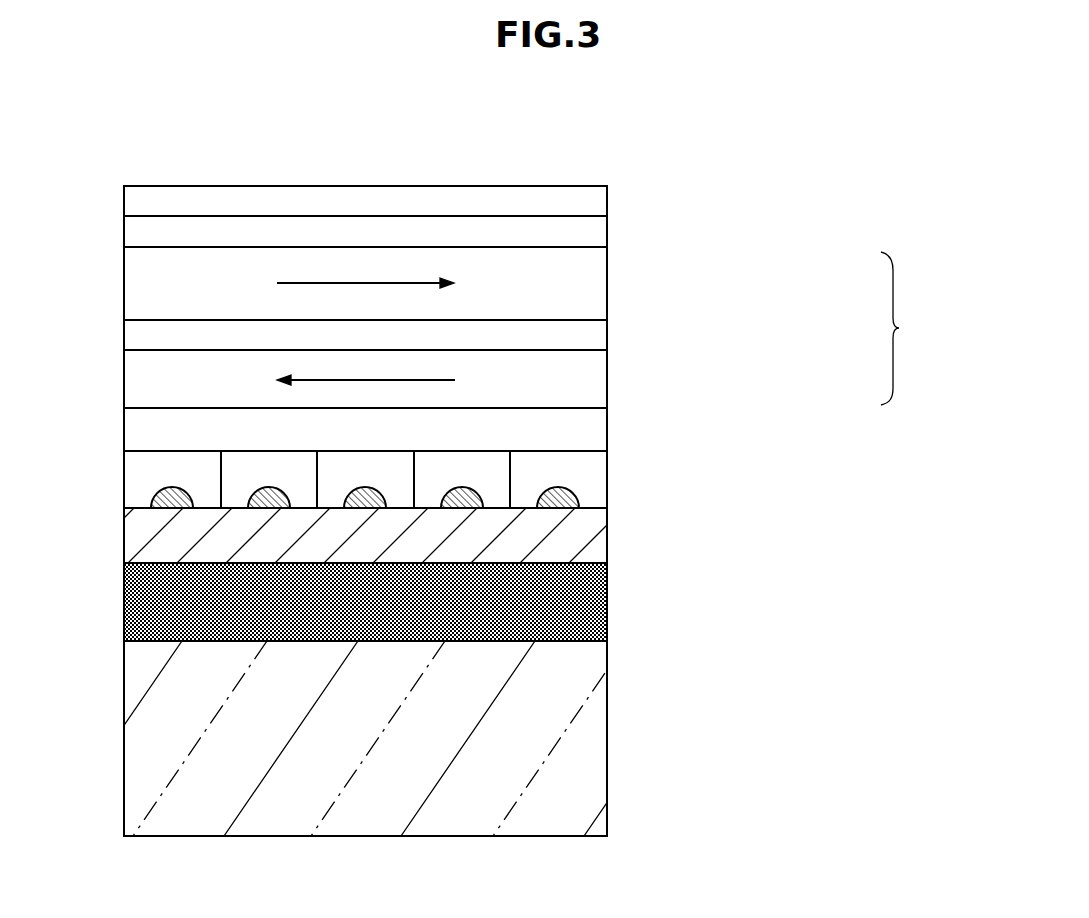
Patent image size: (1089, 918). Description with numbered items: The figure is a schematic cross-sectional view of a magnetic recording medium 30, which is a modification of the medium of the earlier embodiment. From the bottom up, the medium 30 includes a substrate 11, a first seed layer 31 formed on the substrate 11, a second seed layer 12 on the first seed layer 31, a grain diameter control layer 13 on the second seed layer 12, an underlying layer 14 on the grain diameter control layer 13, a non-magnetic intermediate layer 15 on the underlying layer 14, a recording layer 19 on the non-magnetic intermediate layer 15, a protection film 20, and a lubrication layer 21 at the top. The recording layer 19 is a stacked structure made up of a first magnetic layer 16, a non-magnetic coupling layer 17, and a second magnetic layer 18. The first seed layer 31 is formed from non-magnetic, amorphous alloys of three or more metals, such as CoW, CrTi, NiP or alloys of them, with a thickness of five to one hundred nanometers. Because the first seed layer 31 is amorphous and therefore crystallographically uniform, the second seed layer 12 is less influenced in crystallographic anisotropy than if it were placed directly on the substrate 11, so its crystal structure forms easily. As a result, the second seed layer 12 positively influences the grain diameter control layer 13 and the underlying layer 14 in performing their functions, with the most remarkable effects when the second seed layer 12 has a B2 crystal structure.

The magnetic recording medium 30 is at (143, 137).
The lubrication layer 21 is at (607, 197).
The protection film 20 is at (607, 228).
The second magnetic layer 18 is at (607, 266).
The non-magnetic coupling layer 17 is at (607, 330).
The first magnetic layer 16 is at (607, 383).
The recording layer 19 is at (982, 328).
The non-magnetic intermediate layer 15 is at (607, 431).
The underlying layer 14 is at (577, 465).
The grain diameter control layer 13 is at (573, 498).
The second seed layer 12 is at (607, 558).
The first seed layer 31 is at (607, 612).
The substrate 11 is at (607, 730).